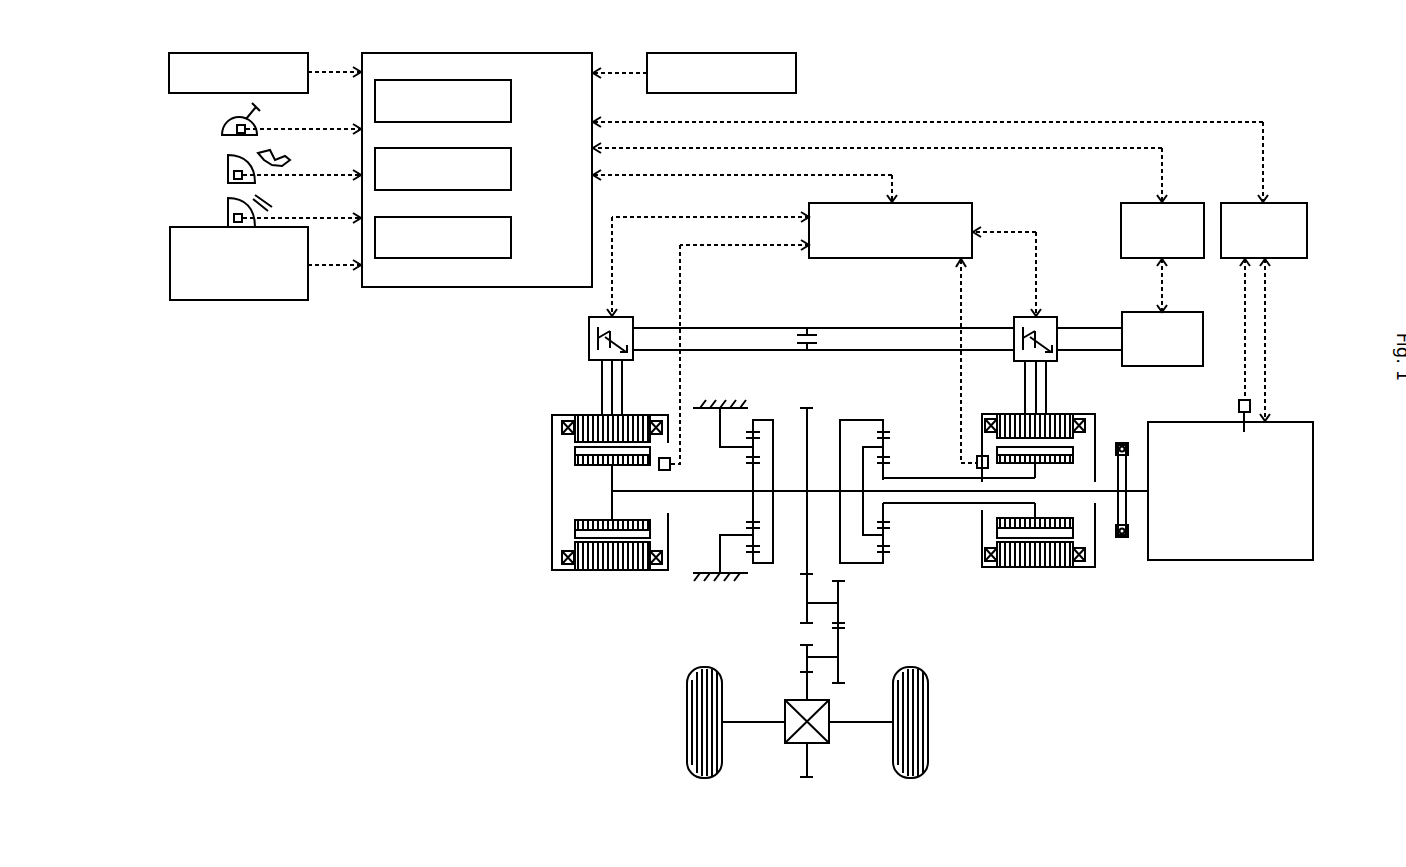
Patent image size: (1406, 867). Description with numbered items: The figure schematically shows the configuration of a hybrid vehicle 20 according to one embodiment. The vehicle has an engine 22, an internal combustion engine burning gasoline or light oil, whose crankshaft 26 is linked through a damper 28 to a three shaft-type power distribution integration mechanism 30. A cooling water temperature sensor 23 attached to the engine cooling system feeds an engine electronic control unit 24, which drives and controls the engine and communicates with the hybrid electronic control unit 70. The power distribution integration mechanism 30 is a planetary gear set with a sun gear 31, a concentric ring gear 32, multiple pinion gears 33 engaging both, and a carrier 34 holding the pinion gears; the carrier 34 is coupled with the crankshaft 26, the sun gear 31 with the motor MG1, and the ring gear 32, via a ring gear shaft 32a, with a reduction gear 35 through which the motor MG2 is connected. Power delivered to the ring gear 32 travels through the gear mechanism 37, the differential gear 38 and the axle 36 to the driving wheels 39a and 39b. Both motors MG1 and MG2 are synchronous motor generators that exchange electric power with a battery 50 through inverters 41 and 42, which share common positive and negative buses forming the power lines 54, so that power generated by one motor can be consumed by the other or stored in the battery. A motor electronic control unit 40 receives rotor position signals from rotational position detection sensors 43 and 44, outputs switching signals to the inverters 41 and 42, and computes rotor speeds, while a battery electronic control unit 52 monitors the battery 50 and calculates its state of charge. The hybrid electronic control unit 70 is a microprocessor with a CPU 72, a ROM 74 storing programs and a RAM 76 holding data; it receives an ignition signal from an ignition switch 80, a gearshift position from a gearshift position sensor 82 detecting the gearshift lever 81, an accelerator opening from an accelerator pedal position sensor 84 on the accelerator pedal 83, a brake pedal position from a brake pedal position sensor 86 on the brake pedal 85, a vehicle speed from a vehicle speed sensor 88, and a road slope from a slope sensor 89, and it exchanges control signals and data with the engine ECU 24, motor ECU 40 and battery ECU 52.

The hybrid vehicle 20 is at (1063, 80).
The engine 22 is at (1313, 489).
The cooling water temperature sensor 23 is at (1241, 402).
The engine electronic control unit 24 is at (1278, 203).
The crankshaft 26 is at (1137, 492).
The damper 28 is at (1122, 540).
The power distribution integration mechanism 30 is at (891, 409).
The sun gear 31 is at (885, 505).
The ring gear 32 is at (885, 560).
The ring gear shaft 32a is at (830, 490).
The pinion gears 33 is at (885, 533).
The carrier 34 is at (872, 446).
The reduction gear 35 is at (763, 407).
The axle 36 is at (860, 722).
The gear mechanism 37 is at (863, 627).
The differential gear 38 is at (820, 747).
The driving wheel 39a is at (687, 722).
The driving wheel 39b is at (928, 722).
The motor electronic control unit 40 is at (925, 203).
The inverter 41 is at (1032, 317).
The inverter 42 is at (620, 315).
The rotational position detection sensor 43 is at (982, 456).
The rotational position detection sensor 44 is at (664, 457).
The battery 50 is at (1163, 366).
The battery electronic control unit 52 is at (1135, 203).
The power line 54 is at (873, 350).
The hybrid electronic control unit 70 is at (475, 53).
The CPU 72 is at (511, 100).
The ROM 74 is at (511, 170).
The RAM 76 is at (511, 240).
The ignition switch 80 is at (169, 72).
The gearshift lever 81 is at (253, 108).
The gearshift position sensor 82 is at (237, 129).
The accelerator pedal 83 is at (258, 156).
The accelerator pedal position sensor 84 is at (234, 175).
The brake pedal 85 is at (264, 205).
The brake pedal position sensor 86 is at (234, 218).
The vehicle speed sensor 88 is at (170, 268).
The slope sensor 89 is at (796, 73).
The motor MG1 is at (1040, 570).
The motor MG2 is at (592, 414).